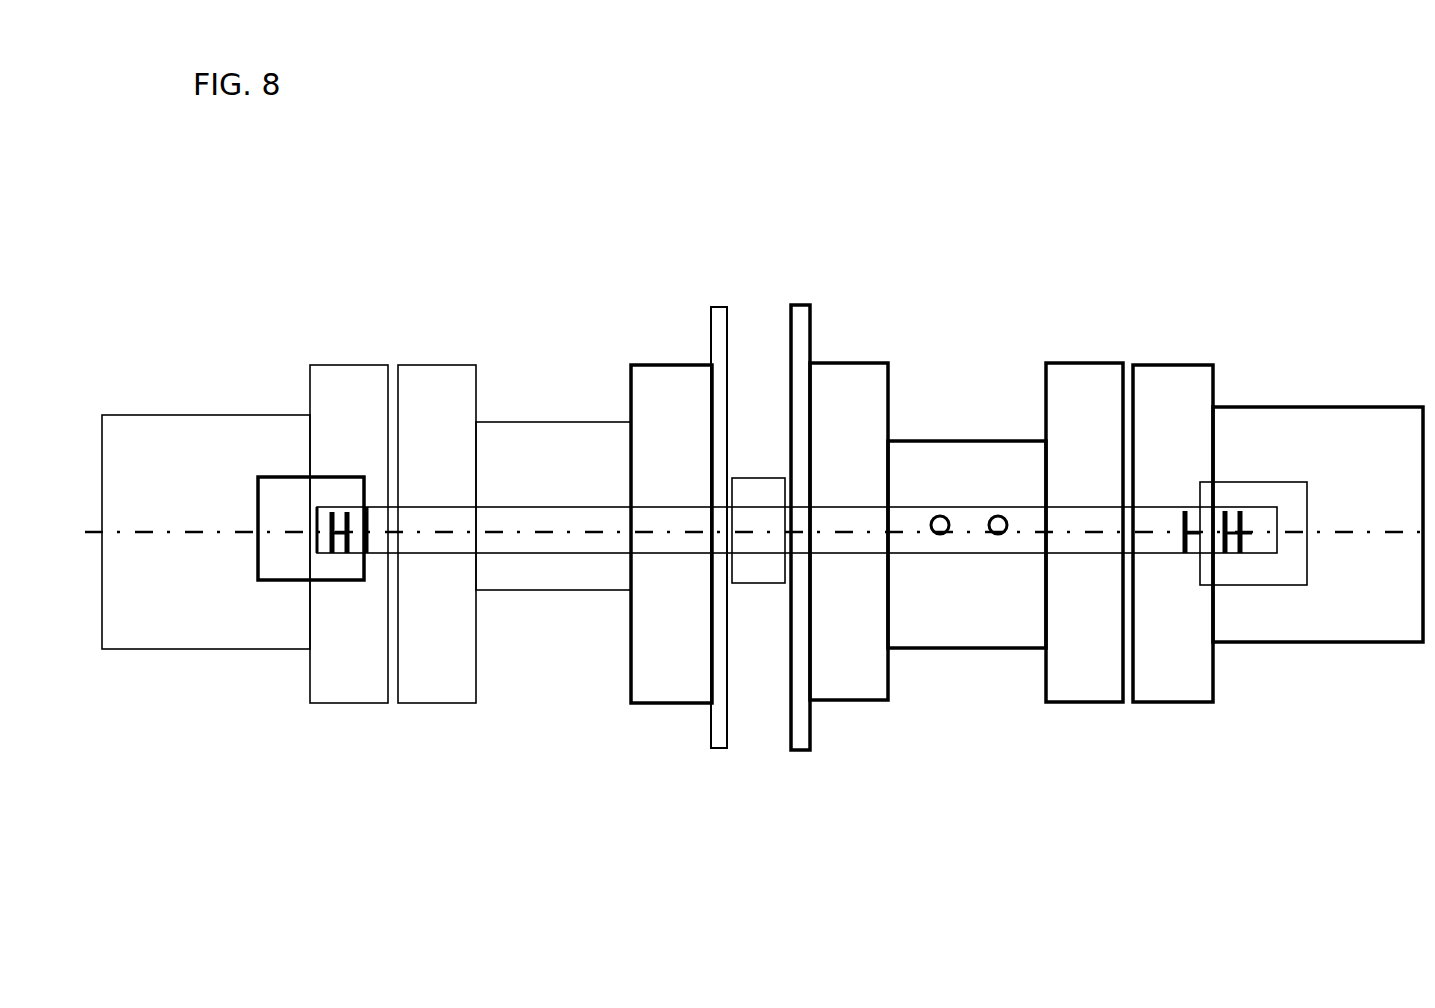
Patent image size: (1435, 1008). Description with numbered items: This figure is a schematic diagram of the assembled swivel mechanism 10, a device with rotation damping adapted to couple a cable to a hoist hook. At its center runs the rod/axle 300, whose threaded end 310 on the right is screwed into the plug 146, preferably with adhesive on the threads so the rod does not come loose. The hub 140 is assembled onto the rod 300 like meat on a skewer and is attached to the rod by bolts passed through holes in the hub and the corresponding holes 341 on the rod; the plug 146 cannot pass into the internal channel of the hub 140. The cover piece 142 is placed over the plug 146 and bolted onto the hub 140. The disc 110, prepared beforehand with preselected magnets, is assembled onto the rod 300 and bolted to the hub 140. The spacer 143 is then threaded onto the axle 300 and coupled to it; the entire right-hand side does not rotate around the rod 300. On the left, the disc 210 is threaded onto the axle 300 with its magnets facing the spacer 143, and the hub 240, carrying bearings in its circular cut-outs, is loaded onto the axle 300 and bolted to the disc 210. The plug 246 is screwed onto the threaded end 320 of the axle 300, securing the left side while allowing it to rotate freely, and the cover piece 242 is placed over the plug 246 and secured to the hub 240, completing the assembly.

The swivel mechanism 10 is at (1178, 243).
The disc 110 is at (799, 725).
The hub 140 is at (1007, 612).
The cover piece 142 is at (1365, 613).
The spacer 143 is at (749, 487).
The plug 146 is at (1271, 565).
The disc 210 is at (718, 725).
The hub 240 is at (568, 592).
The cover piece 242 is at (211, 593).
The plug 246 is at (326, 563).
The rod/axle 300 is at (527, 518).
The threaded end 310 is at (1242, 512).
The threaded end 320 is at (352, 492).
The holes 341 is at (943, 527).